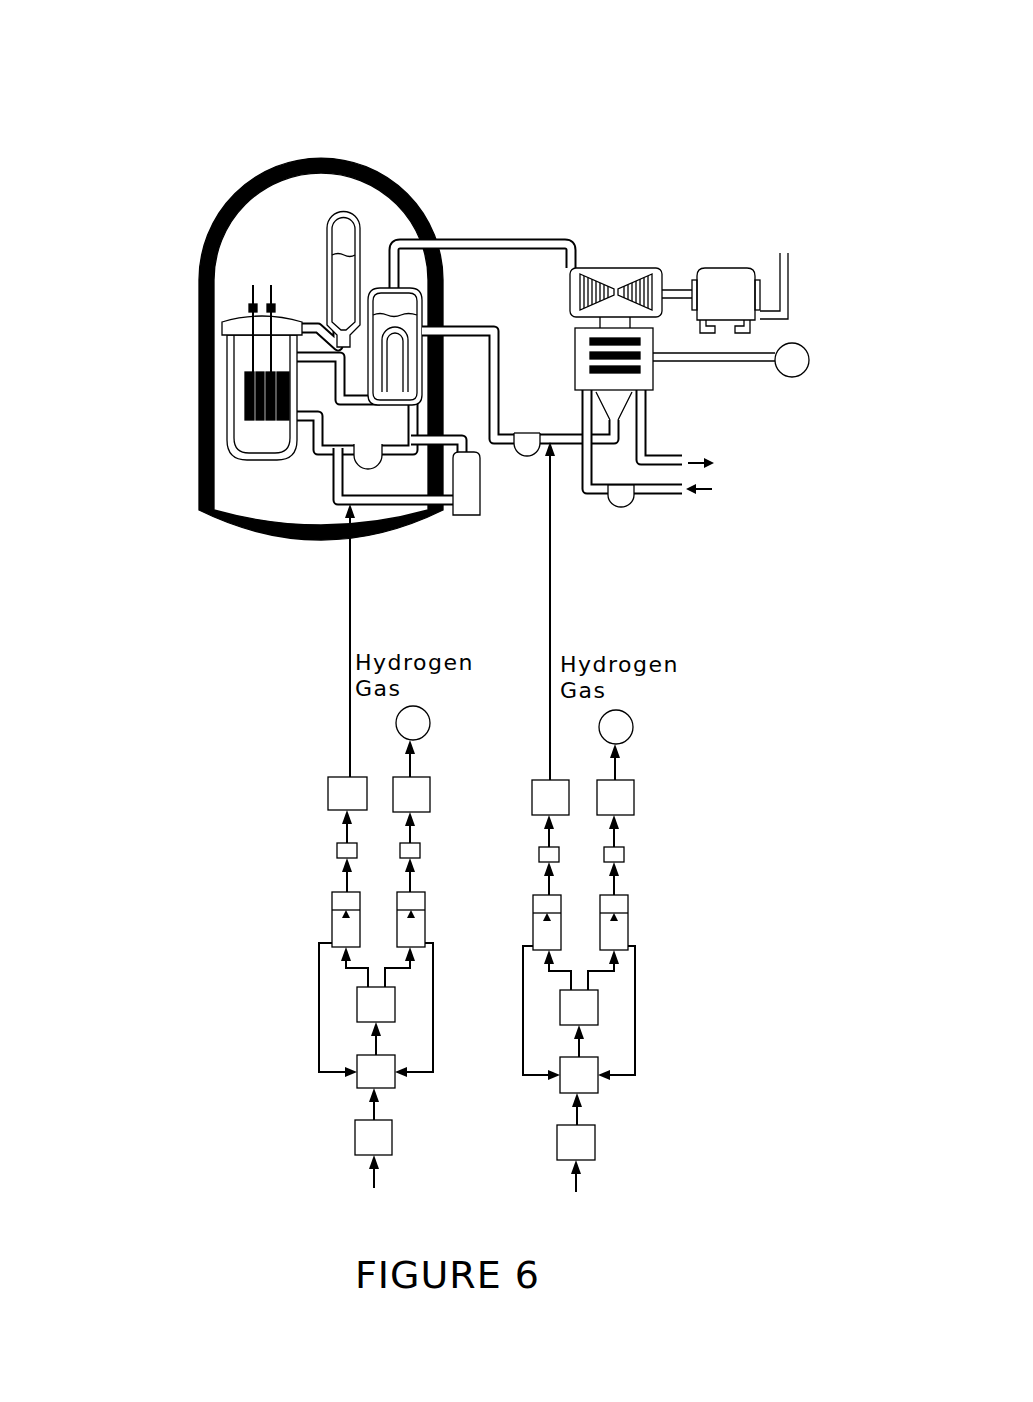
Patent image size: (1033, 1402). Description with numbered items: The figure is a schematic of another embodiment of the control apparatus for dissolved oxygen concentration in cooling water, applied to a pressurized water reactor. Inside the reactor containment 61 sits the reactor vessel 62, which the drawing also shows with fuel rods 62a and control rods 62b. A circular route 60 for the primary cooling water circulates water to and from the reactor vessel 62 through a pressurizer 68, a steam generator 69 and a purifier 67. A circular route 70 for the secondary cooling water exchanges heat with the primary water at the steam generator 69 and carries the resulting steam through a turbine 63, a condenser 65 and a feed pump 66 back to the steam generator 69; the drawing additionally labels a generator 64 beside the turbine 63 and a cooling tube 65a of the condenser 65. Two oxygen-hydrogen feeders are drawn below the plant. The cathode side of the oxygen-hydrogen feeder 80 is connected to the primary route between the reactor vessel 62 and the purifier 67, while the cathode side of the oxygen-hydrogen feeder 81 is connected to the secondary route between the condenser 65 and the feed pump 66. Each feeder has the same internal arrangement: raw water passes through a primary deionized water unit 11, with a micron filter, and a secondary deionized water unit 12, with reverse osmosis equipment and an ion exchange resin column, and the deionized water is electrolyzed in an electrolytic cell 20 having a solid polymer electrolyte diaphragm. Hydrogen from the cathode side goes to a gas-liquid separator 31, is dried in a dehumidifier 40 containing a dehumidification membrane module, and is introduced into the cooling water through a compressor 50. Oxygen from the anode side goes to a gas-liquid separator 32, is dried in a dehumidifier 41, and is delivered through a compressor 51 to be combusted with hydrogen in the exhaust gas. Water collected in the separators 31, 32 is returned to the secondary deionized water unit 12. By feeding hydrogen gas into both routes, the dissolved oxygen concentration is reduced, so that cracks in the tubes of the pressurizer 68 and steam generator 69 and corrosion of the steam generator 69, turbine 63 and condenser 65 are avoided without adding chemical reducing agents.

The reactor containment 61 is at (234, 166).
The pressurizer 68 is at (332, 212).
The steam generator 69 is at (383, 286).
The turbine 63 is at (607, 268).
The condenser 65 is at (660, 336).
The cooling tube 65a is at (740, 446).
The feed pump 66 is at (528, 430).
The generator 64 is at (725, 292).
The reactor vessel 62 is at (252, 457).
The fuel rod 62a is at (247, 405).
The control rod 62b is at (250, 295).
The circular route for primary cooling water 60 is at (320, 455).
The purifier 67 is at (468, 502).
The circular route for secondary cooling water 70 is at (565, 454).
The oxygen-hydrogen feeder 80 is at (208, 996).
The oxygen-hydrogen feeder 81 is at (750, 1006).
The primary deionized water unit 11 is at (357, 1140).
The secondary deionized water unit 12 is at (357, 1078).
The electrolytic cell 20 is at (357, 1005).
The gas-liquid separator 31 is at (332, 925).
The gas-liquid separator 32 is at (425, 925).
The dehumidifier 40 is at (337, 852).
The dehumidifier 41 is at (420, 852).
The compressor 50 is at (328, 790).
The compressor 51 is at (430, 792).